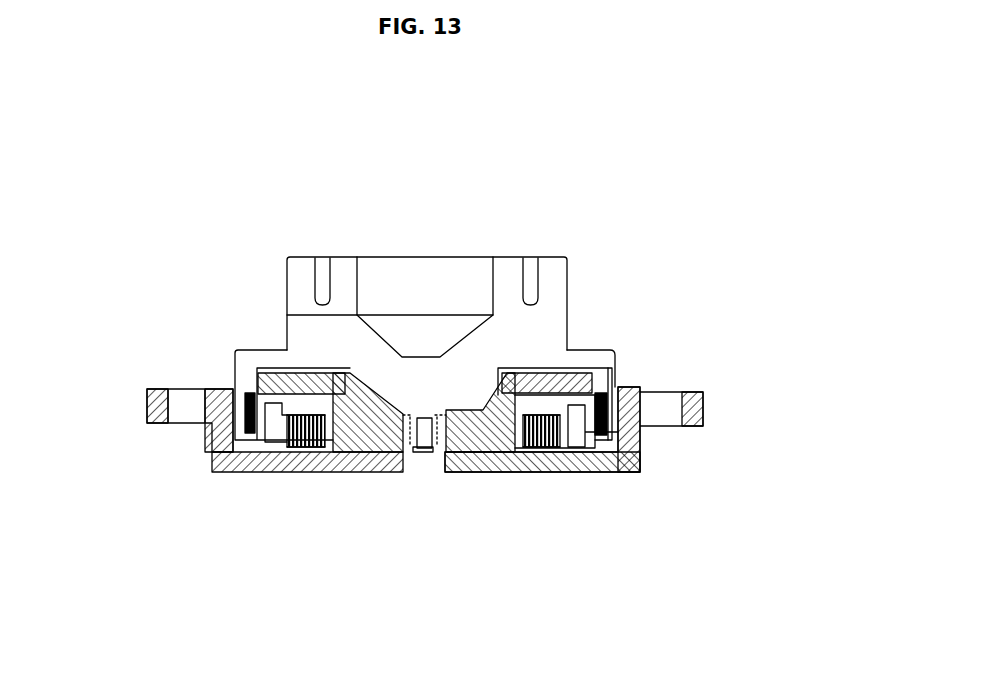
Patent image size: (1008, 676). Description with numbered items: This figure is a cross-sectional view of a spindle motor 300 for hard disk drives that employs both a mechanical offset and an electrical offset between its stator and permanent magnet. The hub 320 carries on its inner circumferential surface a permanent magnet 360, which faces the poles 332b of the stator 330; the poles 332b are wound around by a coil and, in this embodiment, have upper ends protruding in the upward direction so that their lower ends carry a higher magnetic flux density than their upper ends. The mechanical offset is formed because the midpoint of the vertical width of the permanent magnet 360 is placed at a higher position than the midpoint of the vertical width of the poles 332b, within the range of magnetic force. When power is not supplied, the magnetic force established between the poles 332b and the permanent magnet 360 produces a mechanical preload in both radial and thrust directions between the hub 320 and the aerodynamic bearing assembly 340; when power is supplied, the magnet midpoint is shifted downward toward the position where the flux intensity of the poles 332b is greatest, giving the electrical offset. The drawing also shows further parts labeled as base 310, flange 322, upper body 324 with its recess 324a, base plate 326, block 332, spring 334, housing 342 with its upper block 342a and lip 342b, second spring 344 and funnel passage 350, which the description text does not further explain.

The spindle motor 300 is at (692, 335).
The base housing 310 is at (647, 464).
The hub 320 is at (265, 346).
The flange 322 is at (210, 389).
The upper body 324 is at (287, 346).
The recess 324a is at (462, 283).
The base plate 326 is at (390, 473).
The stator 330 is at (333, 473).
The upper block 332 is at (334, 372).
The poles 332b is at (270, 430).
The spring 334 is at (296, 473).
The aerodynamic bearing assembly 340 is at (447, 473).
The right housing 342 is at (596, 381).
The right upper block 342a is at (528, 372).
The lip 342b is at (618, 383).
The right spring 344 is at (522, 473).
The funnel passage 350 is at (405, 356).
The permanent magnet 360 is at (600, 473).